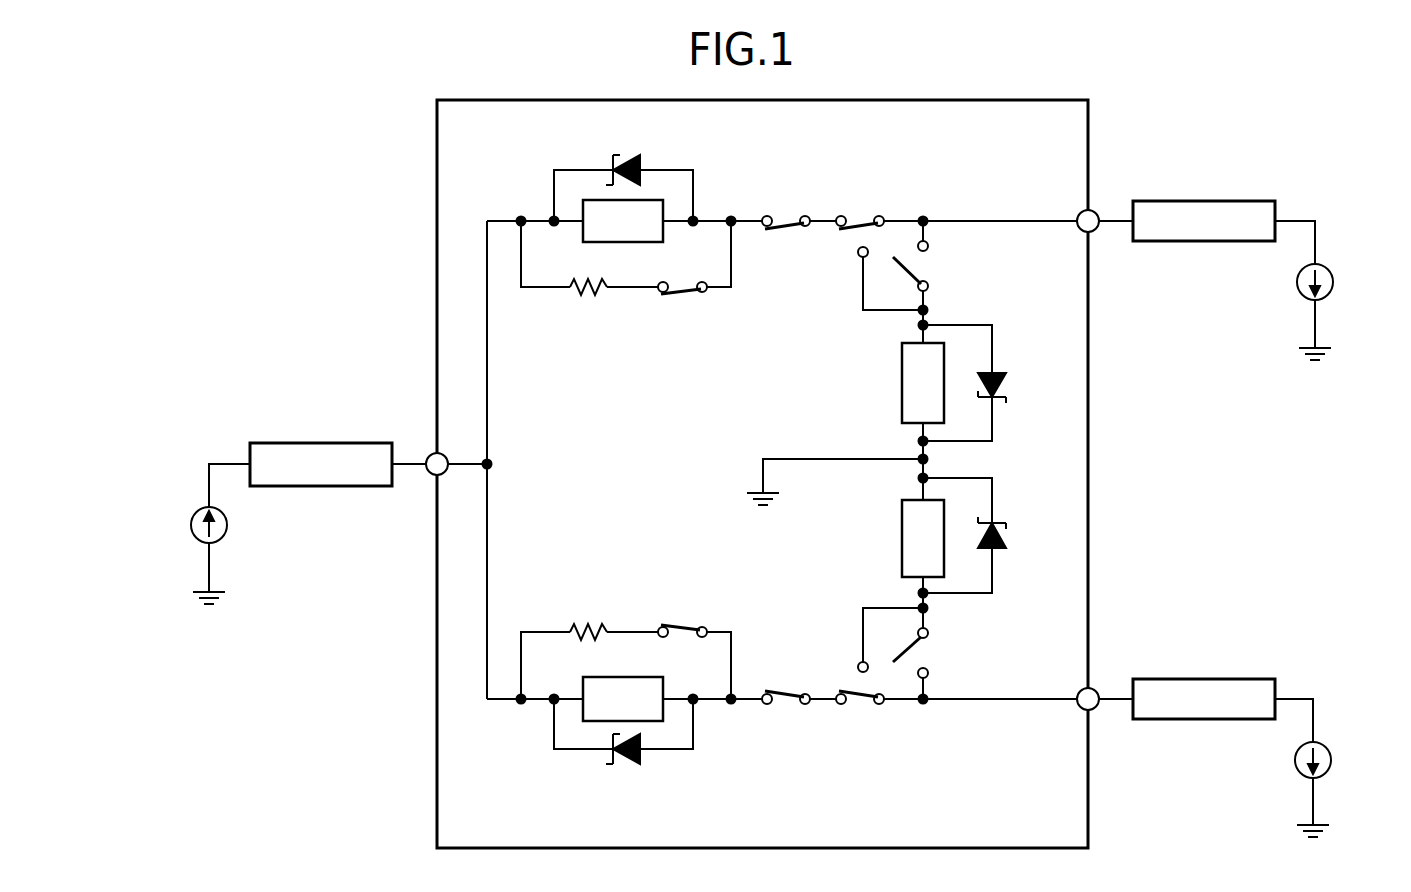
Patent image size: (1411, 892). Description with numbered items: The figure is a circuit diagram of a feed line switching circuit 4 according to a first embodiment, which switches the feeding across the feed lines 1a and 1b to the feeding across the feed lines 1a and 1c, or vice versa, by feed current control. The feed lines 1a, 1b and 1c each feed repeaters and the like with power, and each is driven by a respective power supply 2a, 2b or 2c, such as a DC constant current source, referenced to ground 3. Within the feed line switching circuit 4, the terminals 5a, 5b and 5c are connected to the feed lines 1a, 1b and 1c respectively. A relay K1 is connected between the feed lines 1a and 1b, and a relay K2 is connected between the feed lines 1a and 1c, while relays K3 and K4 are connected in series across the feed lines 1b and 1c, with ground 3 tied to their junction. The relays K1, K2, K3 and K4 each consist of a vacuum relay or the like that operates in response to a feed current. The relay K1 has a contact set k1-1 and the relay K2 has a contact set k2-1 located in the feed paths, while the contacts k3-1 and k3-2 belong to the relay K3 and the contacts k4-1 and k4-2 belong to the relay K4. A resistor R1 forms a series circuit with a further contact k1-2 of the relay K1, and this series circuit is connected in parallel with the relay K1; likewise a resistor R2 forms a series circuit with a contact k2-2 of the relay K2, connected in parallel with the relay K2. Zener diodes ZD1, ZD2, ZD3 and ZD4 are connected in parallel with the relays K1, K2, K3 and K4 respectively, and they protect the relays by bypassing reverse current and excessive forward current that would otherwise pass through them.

The feed line 1a is at (324, 443).
The feed line 1b is at (1207, 201).
The feed line 1c is at (1205, 681).
The power supply 2a is at (186, 523).
The power supply 2b is at (1293, 283).
The power supply 2c is at (1291, 761).
The ground 3 is at (782, 570).
The feed line switching circuit 4 is at (1126, 817).
The terminal 5a is at (434, 476).
The terminal 5b is at (1097, 230).
The terminal 5c is at (1096, 708).
The relay K1 is at (623, 221).
The relay K2 is at (623, 699).
The relay K3 is at (923, 564).
The relay K4 is at (923, 421).
The Zener diode ZD1 is at (623, 170).
The Zener diode ZD2 is at (623, 744).
The Zener diode ZD3 is at (993, 535).
The Zener diode ZD4 is at (993, 383).
The resistor R1 is at (589, 273).
The resistor R2 is at (589, 645).
The contact set k1-1 is at (860, 712).
The contact k1-2 is at (694, 273).
The contact set k2-1 is at (860, 206).
The contact k2-2 is at (694, 645).
The contact k3-1 is at (920, 653).
The contact k3-2 is at (786, 712).
The contact k4-1 is at (920, 282).
The contact k4-2 is at (786, 206).